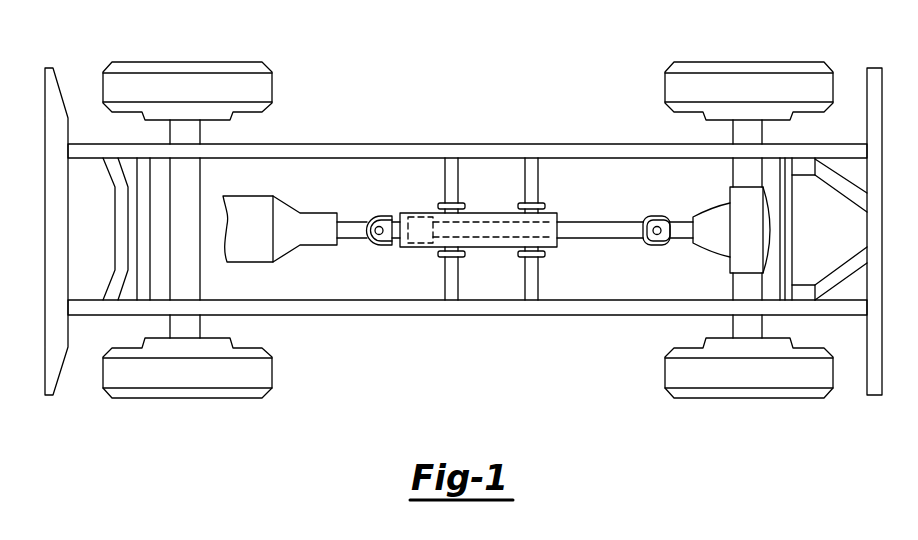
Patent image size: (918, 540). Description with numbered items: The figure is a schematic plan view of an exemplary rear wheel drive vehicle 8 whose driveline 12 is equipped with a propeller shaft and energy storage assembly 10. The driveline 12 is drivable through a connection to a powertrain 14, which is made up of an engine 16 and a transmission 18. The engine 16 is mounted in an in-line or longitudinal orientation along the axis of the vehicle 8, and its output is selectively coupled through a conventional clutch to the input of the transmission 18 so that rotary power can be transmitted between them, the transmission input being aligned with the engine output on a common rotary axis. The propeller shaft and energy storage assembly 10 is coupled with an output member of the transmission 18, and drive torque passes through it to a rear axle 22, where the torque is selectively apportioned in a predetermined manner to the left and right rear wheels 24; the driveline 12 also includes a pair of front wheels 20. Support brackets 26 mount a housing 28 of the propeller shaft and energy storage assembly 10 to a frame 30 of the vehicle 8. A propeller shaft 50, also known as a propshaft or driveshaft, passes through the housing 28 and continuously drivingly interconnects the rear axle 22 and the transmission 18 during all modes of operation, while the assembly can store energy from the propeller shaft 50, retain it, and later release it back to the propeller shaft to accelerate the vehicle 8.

The vehicle 8 is at (590, 104).
The propeller shaft and energy storage assembly 10 is at (478, 205).
The driveline 12 is at (512, 196).
The powertrain 14 is at (276, 206).
The engine 16 is at (253, 260).
The transmission 18 is at (290, 247).
The front wheels 20 is at (150, 62).
The rear axle 22 is at (705, 257).
The rear wheels 24 is at (707, 62).
The support brackets 26 is at (450, 173).
The housing 28 is at (495, 248).
The frame 30 is at (388, 316).
The propeller shaft 50 is at (395, 236).